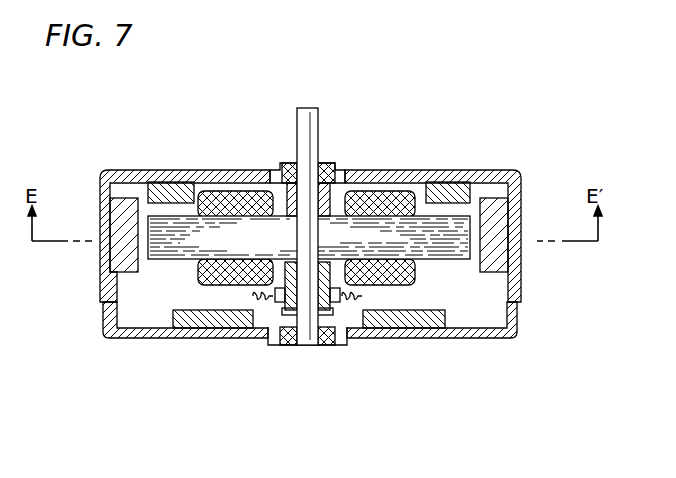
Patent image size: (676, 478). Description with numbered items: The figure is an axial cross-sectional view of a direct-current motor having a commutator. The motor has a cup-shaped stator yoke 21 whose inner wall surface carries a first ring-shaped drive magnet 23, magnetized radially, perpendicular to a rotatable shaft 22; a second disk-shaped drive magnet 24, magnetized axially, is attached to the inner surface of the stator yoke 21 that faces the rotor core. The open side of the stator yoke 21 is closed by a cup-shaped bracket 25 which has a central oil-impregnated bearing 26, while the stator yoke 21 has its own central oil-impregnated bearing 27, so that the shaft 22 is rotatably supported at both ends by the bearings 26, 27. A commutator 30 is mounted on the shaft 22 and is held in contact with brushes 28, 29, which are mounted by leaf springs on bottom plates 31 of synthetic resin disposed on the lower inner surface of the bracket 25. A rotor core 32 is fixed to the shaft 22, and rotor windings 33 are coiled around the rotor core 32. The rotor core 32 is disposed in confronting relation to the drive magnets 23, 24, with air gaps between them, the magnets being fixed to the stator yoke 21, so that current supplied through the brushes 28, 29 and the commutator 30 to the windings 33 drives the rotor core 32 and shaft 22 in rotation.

The cup-shaped stator yoke 21 is at (518, 172).
The rotatable shaft 22 is at (315, 108).
The first ring-shaped drive magnet 23 is at (502, 238).
The second disk-shaped drive magnet 24 is at (462, 185).
The cup-shaped bracket 25 is at (502, 338).
The oil-impregnated bearing 26 is at (327, 345).
The oil-impregnated bearing 27 is at (327, 163).
The brush 28 is at (280, 302).
The brush 29 is at (340, 305).
The commutator 30 is at (288, 335).
The bottom plate 31 is at (225, 318).
The rotor core 32 is at (170, 252).
The rotor windings 33 is at (222, 197).